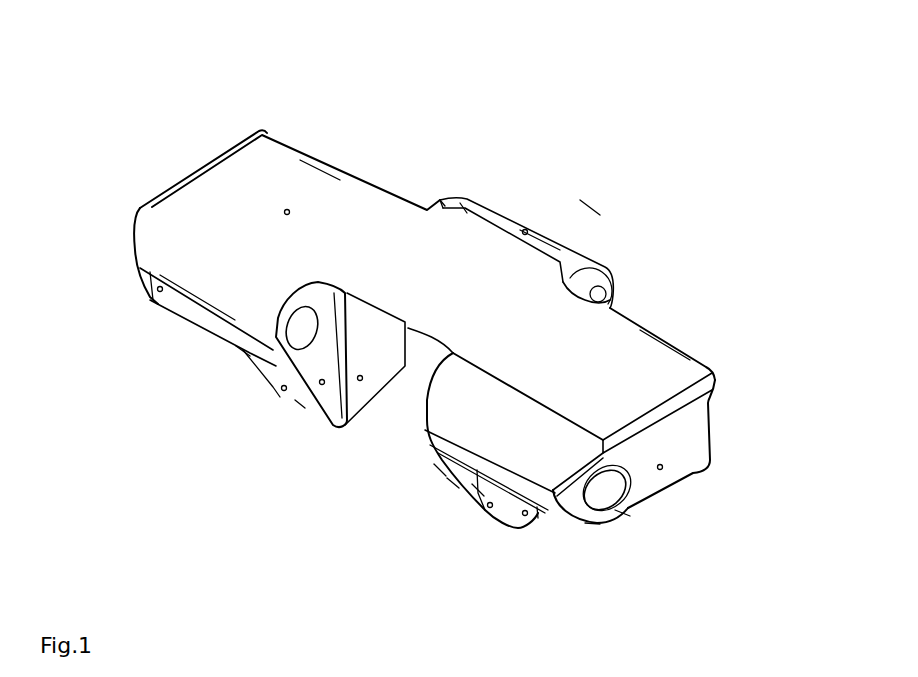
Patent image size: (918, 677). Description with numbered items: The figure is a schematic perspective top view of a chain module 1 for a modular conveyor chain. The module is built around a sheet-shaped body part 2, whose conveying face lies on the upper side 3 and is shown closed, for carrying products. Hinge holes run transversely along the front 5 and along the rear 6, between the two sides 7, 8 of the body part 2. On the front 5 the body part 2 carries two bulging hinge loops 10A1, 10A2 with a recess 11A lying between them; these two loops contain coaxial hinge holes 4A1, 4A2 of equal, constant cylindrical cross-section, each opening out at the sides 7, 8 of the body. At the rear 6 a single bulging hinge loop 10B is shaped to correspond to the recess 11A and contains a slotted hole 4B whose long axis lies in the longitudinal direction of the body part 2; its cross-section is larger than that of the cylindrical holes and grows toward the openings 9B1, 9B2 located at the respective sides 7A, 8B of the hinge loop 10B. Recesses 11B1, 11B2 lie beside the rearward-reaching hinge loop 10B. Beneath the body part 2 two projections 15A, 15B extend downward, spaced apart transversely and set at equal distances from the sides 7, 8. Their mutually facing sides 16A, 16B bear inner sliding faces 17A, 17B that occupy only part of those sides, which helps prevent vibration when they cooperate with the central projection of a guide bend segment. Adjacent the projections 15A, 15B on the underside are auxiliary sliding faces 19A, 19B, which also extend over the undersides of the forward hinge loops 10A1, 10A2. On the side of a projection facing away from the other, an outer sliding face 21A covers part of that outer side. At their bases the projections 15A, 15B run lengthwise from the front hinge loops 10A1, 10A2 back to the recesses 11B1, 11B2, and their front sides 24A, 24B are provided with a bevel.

The chain module 1 is at (594, 190).
The sheet-shaped body part 2 is at (693, 422).
The upper side 3 is at (287, 210).
The front 5 is at (158, 289).
The rear 6 is at (525, 230).
The side 7 is at (663, 467).
The side of hinge loop 7A is at (605, 273).
The side 8 is at (178, 183).
The side of hinge loop 8B is at (447, 198).
The opening 9B1 is at (440, 200).
The opening 9B2 is at (607, 298).
The bulging hinge loop 10B is at (567, 243).
The bulging hinge loop 10A1 is at (230, 292).
The bulging hinge loop 10A2 is at (623, 513).
The recess 11A is at (413, 433).
The recess 11B1 is at (387, 165).
The recess 11B2 is at (728, 343).
The hinge hole 4A1 is at (242, 350).
The hinge hole 4A2 is at (608, 493).
The slotted hole 4B is at (613, 288).
The auxiliary sliding face 19A is at (593, 527).
The auxiliary sliding face 19B is at (302, 330).
The projection 15A is at (478, 490).
The projection 15B is at (300, 403).
The side facing the other projection 16A is at (453, 483).
The side facing the other projection 16B is at (321, 384).
The inner sliding face 17A is at (440, 470).
The inner sliding face 17B is at (359, 380).
The outer sliding face 21A is at (533, 517).
The front side of projection 24A is at (493, 513).
The front side of projection 24B is at (282, 389).